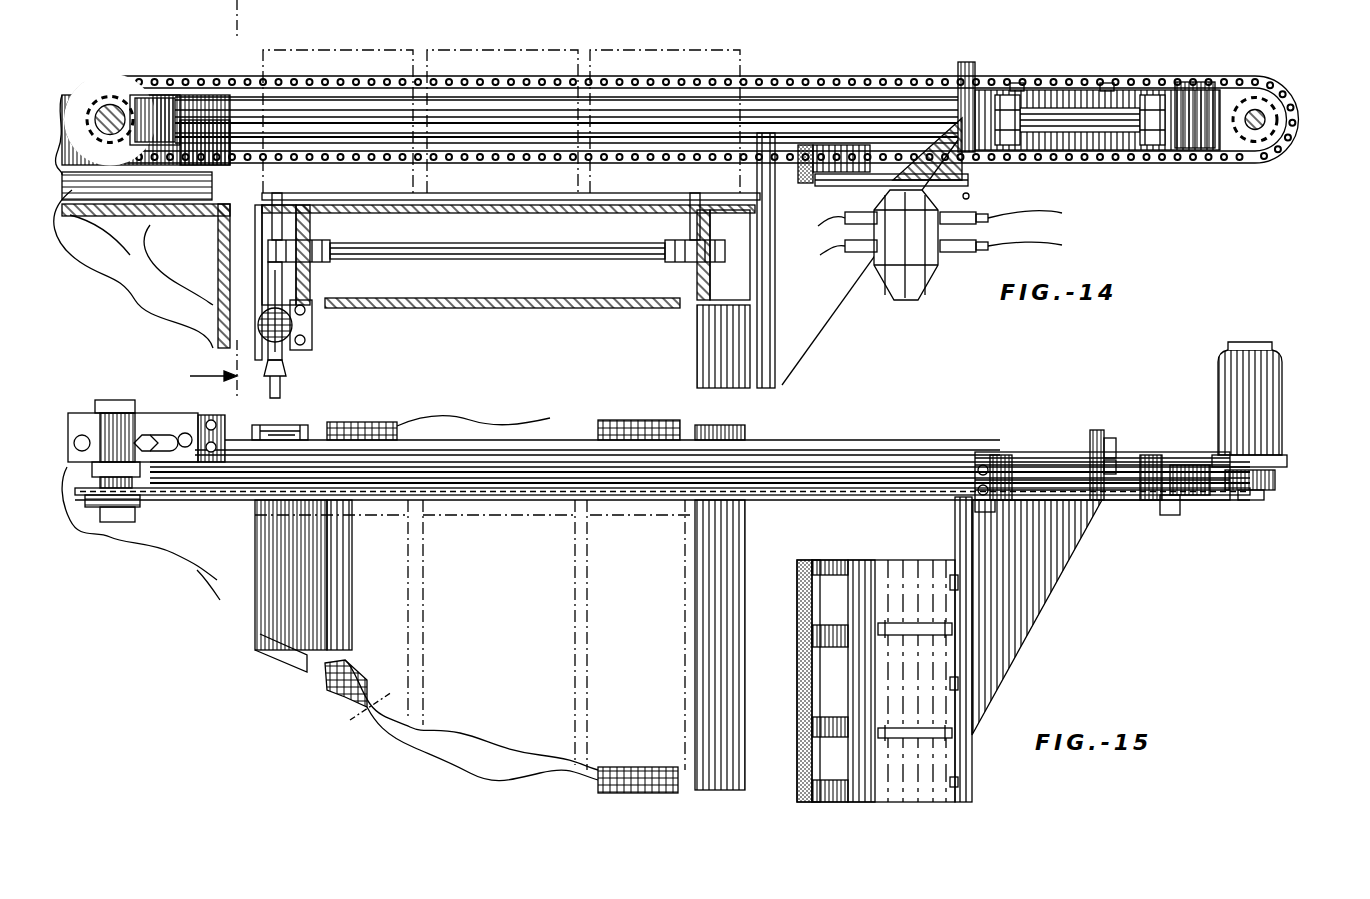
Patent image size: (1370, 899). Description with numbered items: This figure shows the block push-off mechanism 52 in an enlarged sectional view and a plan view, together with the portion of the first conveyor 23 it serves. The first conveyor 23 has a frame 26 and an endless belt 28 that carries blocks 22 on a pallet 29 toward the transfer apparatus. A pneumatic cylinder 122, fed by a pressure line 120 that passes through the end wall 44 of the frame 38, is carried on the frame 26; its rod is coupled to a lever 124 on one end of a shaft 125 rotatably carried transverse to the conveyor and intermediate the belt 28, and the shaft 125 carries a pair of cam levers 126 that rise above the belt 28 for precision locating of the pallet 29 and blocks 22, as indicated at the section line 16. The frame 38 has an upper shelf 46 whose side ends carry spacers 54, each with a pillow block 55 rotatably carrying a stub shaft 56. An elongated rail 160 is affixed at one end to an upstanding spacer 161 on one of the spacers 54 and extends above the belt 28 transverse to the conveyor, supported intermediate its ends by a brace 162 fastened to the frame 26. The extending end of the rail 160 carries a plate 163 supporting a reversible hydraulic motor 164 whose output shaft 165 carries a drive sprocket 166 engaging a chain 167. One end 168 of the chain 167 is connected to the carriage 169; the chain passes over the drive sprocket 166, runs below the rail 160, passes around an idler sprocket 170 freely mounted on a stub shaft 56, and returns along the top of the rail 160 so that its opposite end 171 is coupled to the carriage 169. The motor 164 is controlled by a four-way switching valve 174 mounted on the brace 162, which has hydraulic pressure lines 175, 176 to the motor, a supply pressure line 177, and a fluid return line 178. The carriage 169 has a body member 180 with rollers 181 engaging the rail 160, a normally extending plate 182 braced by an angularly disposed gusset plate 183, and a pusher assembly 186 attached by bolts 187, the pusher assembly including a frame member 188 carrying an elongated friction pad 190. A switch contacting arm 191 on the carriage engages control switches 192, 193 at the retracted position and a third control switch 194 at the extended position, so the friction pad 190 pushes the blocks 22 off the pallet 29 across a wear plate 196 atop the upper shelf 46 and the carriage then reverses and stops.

In FIG. 14, the section line 16- 16 is at (190, 200).
In FIG. 15, the section line 16- 16 is at (158, 374).
In FIG. 14, the blocks 22 is at (437, 50).
In FIG. 15, the blocks 22 is at (375, 728).
In FIG. 14, the first conveyor 23 is at (695, 341).
In FIG. 15, the first conveyor 23 is at (312, 703).
In FIG. 14, the frame 26 is at (700, 372).
In FIG. 15, the frame 26 is at (745, 436).
In FIG. 14, the endless belt 28 is at (540, 208).
In FIG. 15, the endless belt 28 is at (410, 425).
In FIG. 15, the pallet 29 is at (505, 500).
In FIG. 14, the frame 38 is at (135, 285).
In FIG. 15, the frame 38 is at (165, 556).
In FIG. 14, the end wall 44 is at (215, 330).
In FIG. 14, the upper shelf 46 is at (150, 260).
In FIG. 14, the block push-off mechanism 52 is at (915, 65).
In FIG. 15, the block push-off mechanism 52 is at (1155, 560).
In FIG. 14, the spacers 54 is at (70, 200).
In FIG. 14, the pillow block 55 is at (75, 100).
In FIG. 15, the pillow block 55 is at (72, 418).
In FIG. 14, the stub shaft 56 is at (140, 95).
In FIG. 15, the stub shaft 56 is at (132, 405).
In FIG. 14, the pressure line 120 is at (288, 370).
In FIG. 14, the pneumatic cylinder 122 is at (292, 330).
In FIG. 14, the lever 124 is at (285, 292).
In FIG. 14, the shaft 125 is at (512, 252).
In FIG. 14, the cam levers 126 is at (328, 248).
In FIG. 14, the elongated rail 160 is at (820, 105).
In FIG. 15, the elongated rail 160 is at (875, 455).
In FIG. 14, the upstanding spacer 161 is at (212, 135).
In FIG. 14, the brace 162 is at (778, 366).
In FIG. 14, the plate 163 is at (1290, 150).
In FIG. 15, the plate 163 is at (1287, 462).
In FIG. 15, the reversible hydraulic motor 164 is at (1285, 400).
In FIG. 14, the output shaft 165 is at (1268, 115).
In FIG. 15, the output shaft 165 is at (1258, 500).
In FIG. 14, the drive sprocket 166 is at (1275, 124).
In FIG. 15, the drive sprocket 166 is at (1275, 481).
In FIG. 14, the chain 167 is at (1222, 155).
In FIG. 15, the chain 167 is at (888, 496).
In FIG. 14, the end of chain 168 is at (1205, 82).
In FIG. 15, the end of chain 168 is at (1190, 500).
In FIG. 14, the carriage 169 is at (1078, 78).
In FIG. 15, the carriage 169 is at (1108, 488).
In FIG. 14, the idler sprocket 170 is at (100, 88).
In FIG. 15, the idler sprocket 170 is at (140, 500).
In FIG. 14, the opposite end of chain 171 is at (985, 48).
In FIG. 15, the opposite end of chain 171 is at (968, 462).
In FIG. 14, the 4-way switching valve 174 is at (905, 300).
In FIG. 14, the hydraulic pressure line 175 is at (1062, 213).
In FIG. 14, the hydraulic pressure line 176 is at (1062, 245).
In FIG. 14, the supply pressure line 177 is at (845, 224).
In FIG. 14, the fluid return line 178 is at (845, 252).
In FIG. 14, the body member 180 is at (1050, 90).
In FIG. 15, the body member 180 is at (1050, 455).
In FIG. 14, the rollers 181 is at (1007, 95).
In FIG. 15, the rollers 181 is at (1000, 455).
In FIG. 14, the normally extending plate 182 is at (960, 165).
In FIG. 15, the normally extending plate 182 is at (990, 665).
In FIG. 14, the gusset plate 183 is at (1100, 165).
In FIG. 15, the gusset plate 183 is at (1050, 560).
In FIG. 14, the pusher assembly 186 is at (970, 196).
In FIG. 15, the pusher assembly 186 is at (940, 558).
In FIG. 14, the bolts 187 is at (935, 132).
In FIG. 15, the bolts 187 is at (950, 582).
In FIG. 14, the frame member 188 is at (860, 150).
In FIG. 15, the frame member 188 is at (858, 580).
In FIG. 14, the friction pad 190 is at (805, 182).
In FIG. 15, the friction pad 190 is at (790, 572).
In FIG. 15, the switch contacting arm 191 is at (1095, 430).
In FIG. 15, the first control switch 192 is at (1112, 438).
In FIG. 15, the second control switch 193 is at (1118, 458).
In FIG. 15, the third control switch 194 is at (285, 432).
In FIG. 14, the wear plate 196 is at (105, 228).
In FIG. 15, the wear plate 196 is at (205, 582).